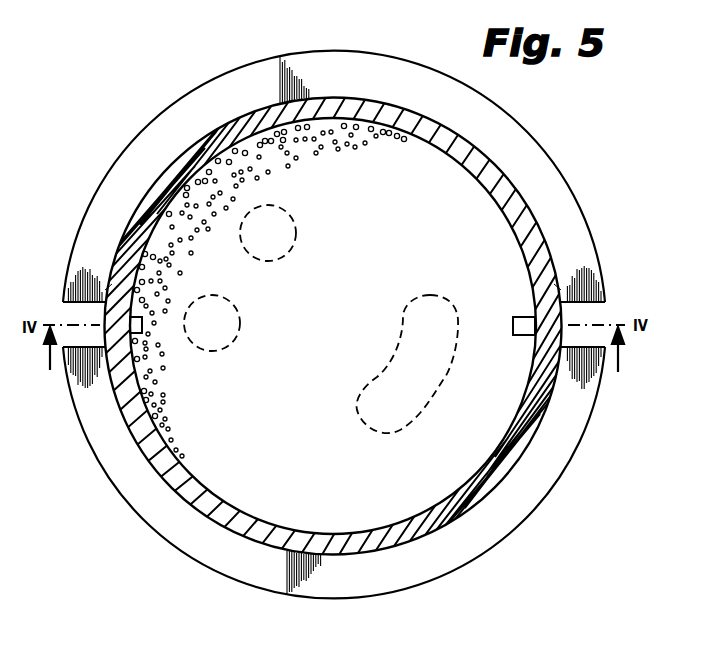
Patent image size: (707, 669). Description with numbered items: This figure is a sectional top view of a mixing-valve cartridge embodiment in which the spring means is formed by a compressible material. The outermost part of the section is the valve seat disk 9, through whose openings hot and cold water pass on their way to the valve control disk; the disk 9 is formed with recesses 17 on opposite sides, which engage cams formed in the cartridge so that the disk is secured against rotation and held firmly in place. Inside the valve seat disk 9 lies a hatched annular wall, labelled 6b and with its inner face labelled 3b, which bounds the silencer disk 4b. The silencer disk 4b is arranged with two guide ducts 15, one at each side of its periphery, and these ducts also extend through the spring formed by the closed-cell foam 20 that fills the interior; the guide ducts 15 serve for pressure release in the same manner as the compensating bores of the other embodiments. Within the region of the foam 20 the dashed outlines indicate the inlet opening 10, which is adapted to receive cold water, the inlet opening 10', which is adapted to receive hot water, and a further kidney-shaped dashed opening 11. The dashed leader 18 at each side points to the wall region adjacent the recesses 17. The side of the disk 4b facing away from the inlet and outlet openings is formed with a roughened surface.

The valve seat disk 9 is at (352, 50).
The drum wall 6b is at (380, 97).
The inner lining 3b is at (410, 134).
The silencer disk 4b is at (428, 160).
The closed-cell foam 20 is at (276, 290).
The inlet opening 10' is at (285, 226).
The inlet opening 10 is at (232, 323).
The material region 11 is at (410, 315).
The guide ducts 15 is at (143, 319).
The wall zone at port 18 is at (110, 284).
The recesses 17 is at (72, 310).